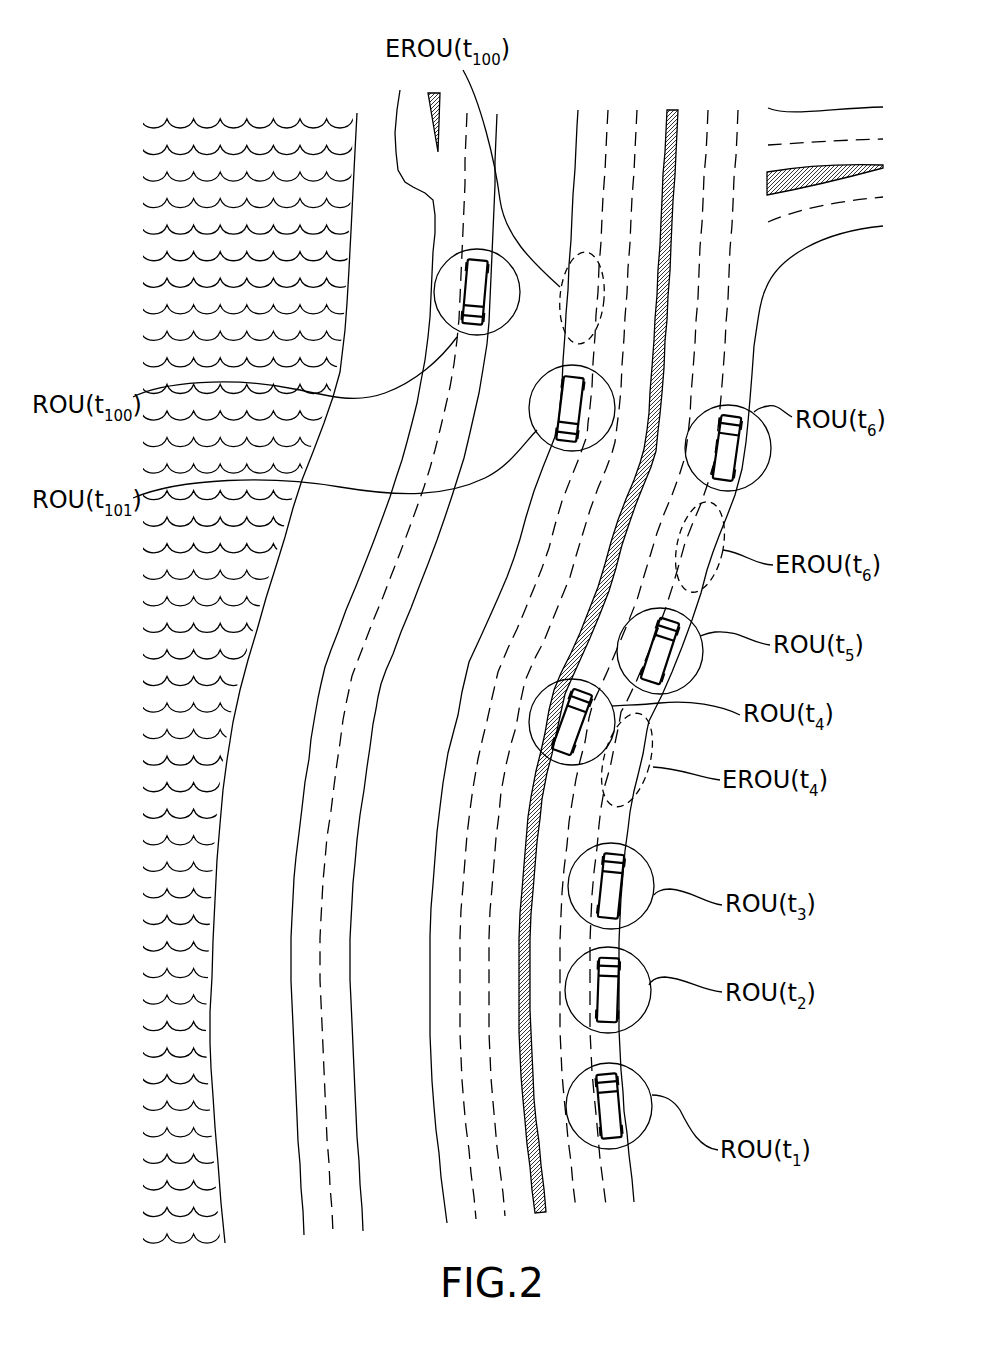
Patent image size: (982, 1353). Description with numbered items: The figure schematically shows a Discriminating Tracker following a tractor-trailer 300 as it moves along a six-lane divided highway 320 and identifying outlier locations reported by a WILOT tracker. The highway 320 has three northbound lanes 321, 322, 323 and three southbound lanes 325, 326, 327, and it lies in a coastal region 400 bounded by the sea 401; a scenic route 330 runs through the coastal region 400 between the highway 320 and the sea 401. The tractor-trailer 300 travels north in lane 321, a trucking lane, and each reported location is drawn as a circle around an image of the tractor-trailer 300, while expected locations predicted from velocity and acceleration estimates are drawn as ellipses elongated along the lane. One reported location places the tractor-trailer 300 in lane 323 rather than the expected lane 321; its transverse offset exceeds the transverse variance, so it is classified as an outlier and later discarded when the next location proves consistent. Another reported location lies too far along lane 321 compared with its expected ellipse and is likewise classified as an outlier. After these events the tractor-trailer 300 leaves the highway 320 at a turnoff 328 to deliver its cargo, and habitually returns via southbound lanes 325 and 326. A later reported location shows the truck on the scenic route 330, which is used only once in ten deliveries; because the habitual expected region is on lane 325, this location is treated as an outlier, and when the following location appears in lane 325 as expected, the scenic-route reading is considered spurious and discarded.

The tractor-trailer 300 is at (472, 280).
The highway 320 is at (662, 615).
The northbound lane 321 is at (740, 353).
The northbound lane 322 is at (713, 297).
The northbound lane 323 is at (690, 253).
The southbound lane 325 is at (590, 197).
The southbound lane 326 is at (628, 170).
The southbound lane 327 is at (655, 163).
The turnoff 328 is at (770, 230).
The scenic route 330 is at (335, 690).
The coastal region 400 is at (366, 258).
The sea 401 is at (207, 340).